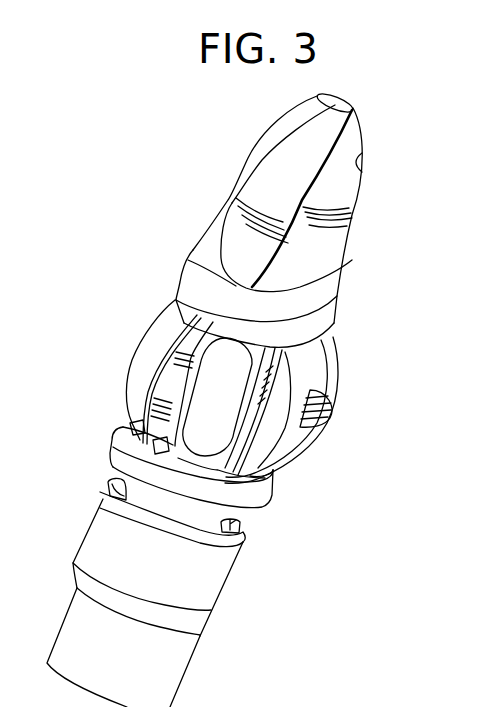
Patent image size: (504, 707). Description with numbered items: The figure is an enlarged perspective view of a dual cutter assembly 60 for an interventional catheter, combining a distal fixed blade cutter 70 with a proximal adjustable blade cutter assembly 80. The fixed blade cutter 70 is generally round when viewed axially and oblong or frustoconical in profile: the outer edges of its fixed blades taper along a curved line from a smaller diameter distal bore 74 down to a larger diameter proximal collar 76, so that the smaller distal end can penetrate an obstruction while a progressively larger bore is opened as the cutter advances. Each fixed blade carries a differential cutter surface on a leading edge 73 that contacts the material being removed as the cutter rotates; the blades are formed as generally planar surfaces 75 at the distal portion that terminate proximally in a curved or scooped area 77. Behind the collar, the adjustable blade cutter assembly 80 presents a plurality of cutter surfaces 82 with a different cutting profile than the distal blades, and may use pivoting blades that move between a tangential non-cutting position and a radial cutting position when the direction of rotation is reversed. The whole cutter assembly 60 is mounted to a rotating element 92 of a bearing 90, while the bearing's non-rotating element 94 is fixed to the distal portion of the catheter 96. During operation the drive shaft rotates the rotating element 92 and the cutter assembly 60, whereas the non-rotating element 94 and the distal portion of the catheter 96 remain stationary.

The dual cutter assembly 60 is at (148, 242).
The fixed blade cutter 70 is at (386, 223).
The leading edge 73 is at (363, 153).
The distal bore 74 is at (343, 102).
The planar surfaces 75 is at (347, 193).
The proximal collar 76 is at (333, 338).
The curved or scooped area 77 is at (316, 272).
The adjustable blade cutter assembly 80 is at (352, 440).
The cutter surfaces 82 is at (170, 374).
The bearing 90 is at (278, 517).
The rotating element 92 is at (130, 457).
The non-rotating element 94 is at (102, 530).
The catheter 96 is at (153, 673).